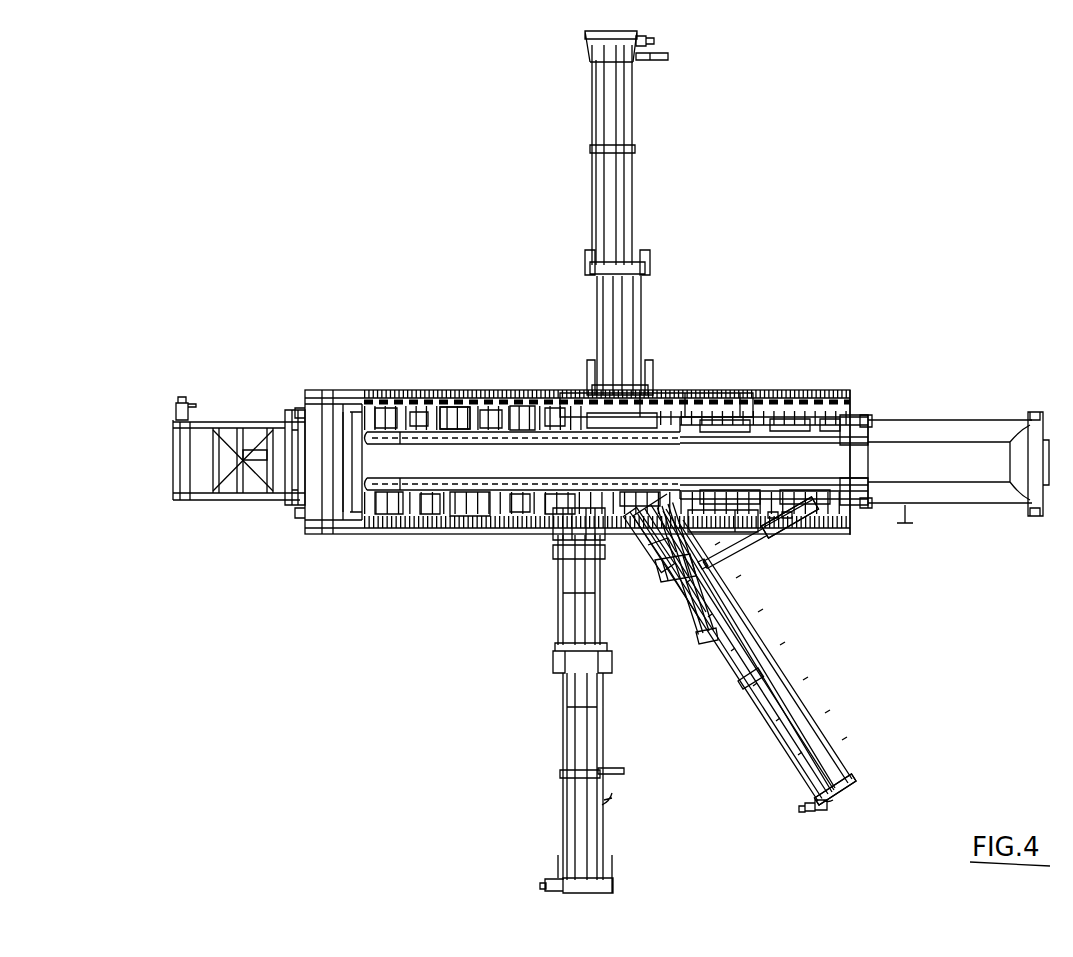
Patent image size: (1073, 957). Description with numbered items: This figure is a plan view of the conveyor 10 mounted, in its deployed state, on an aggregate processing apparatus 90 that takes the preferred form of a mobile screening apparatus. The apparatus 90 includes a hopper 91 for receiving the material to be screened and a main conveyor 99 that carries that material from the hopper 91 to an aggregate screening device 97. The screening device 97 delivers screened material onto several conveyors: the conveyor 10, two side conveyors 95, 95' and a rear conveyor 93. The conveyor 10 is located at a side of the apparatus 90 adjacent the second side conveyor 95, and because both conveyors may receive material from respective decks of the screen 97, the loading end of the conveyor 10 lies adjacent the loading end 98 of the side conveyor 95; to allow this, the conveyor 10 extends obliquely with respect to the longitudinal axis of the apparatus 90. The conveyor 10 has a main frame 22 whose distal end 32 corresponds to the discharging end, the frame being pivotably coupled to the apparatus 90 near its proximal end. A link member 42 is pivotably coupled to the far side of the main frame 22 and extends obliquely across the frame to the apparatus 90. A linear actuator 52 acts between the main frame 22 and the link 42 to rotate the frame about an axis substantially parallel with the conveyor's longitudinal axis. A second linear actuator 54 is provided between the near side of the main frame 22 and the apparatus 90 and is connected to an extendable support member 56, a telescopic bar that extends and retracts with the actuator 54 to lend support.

The conveyor 10 is at (810, 670).
The main frame 22 is at (796, 768).
The distal end 32 is at (846, 795).
The link member 42 is at (700, 598).
The linear actuator 52 is at (675, 566).
The linear actuator 54 is at (740, 558).
The extendable support member 56 is at (790, 517).
The aggregate processing apparatus 90 is at (832, 316).
The hopper 91 is at (950, 455).
The rear conveyor 93 is at (248, 420).
The side conveyor 95 is at (547, 714).
The side conveyor 95' is at (641, 229).
The aggregate screening device 97 is at (458, 410).
The loading end 98 is at (560, 553).
The main conveyor 99 is at (425, 470).